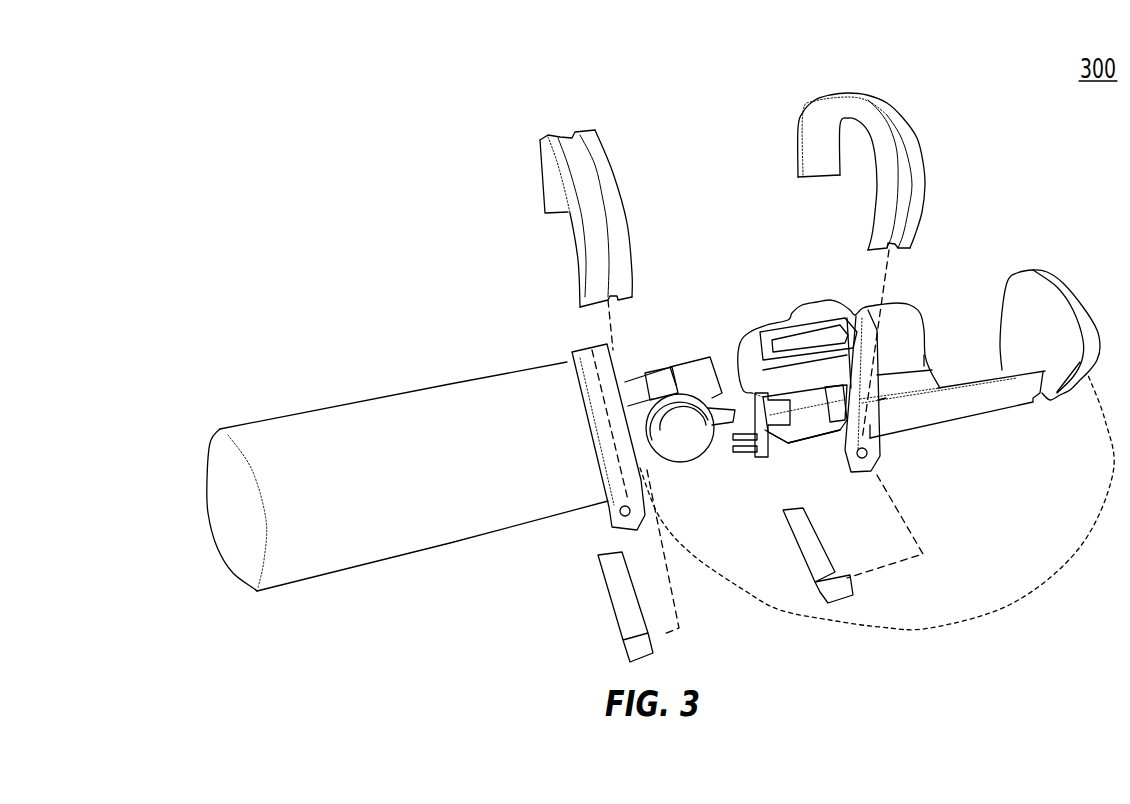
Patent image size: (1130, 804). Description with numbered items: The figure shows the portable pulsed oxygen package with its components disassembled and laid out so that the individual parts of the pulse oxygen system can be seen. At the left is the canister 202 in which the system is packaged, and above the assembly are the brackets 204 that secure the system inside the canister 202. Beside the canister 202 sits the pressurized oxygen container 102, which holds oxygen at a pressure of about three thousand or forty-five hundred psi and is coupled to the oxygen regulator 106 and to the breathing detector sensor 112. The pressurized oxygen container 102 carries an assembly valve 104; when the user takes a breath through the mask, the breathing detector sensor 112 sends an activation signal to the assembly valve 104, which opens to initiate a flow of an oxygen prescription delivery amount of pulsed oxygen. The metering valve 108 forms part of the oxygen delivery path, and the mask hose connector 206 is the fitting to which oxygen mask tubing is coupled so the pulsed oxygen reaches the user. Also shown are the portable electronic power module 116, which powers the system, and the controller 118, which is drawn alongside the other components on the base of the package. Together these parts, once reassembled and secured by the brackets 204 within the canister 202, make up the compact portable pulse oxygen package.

The pressurized oxygen container 102 is at (915, 300).
The assembly valve 104 is at (692, 360).
The oxygen regulator 106 is at (683, 455).
The metering valve 108 is at (768, 460).
The breathing detector sensor 112 is at (887, 398).
The portable electronic power module 116 is at (935, 366).
The controller 118 is at (1005, 398).
The canister 202 is at (312, 412).
The brackets 204 is at (572, 132).
The mask hose connector 206 is at (744, 460).